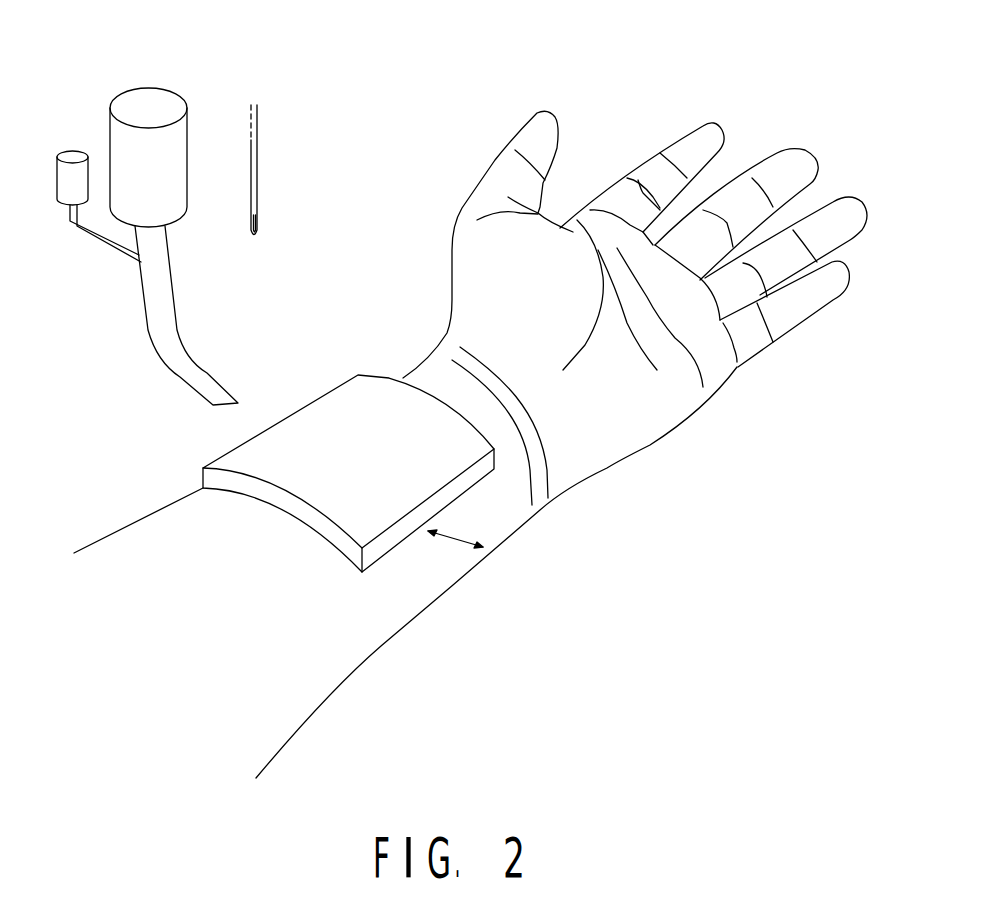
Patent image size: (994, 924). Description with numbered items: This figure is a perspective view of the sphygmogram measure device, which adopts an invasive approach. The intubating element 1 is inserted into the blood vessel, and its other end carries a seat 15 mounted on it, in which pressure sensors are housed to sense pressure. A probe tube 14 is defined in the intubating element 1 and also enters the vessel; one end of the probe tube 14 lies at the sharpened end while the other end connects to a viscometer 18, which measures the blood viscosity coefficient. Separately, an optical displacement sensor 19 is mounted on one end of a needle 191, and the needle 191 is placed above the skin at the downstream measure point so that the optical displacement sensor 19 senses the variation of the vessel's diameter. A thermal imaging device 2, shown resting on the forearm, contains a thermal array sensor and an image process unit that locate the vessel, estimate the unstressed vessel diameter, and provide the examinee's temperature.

The intubating element 1 is at (183, 377).
The thermal imaging device 2 is at (328, 417).
The probe tube 14 is at (107, 242).
The seat 15 is at (145, 115).
The viscometer 18 is at (70, 163).
The optical displacement sensor 19 is at (255, 227).
The needle 191 is at (252, 147).